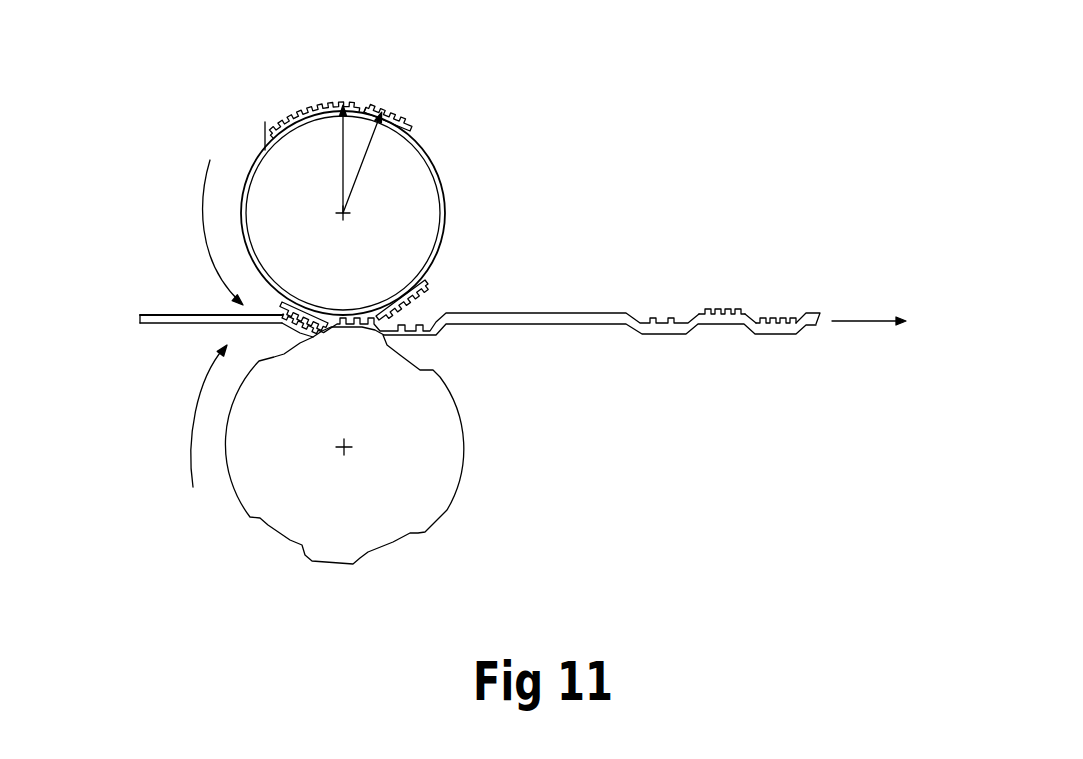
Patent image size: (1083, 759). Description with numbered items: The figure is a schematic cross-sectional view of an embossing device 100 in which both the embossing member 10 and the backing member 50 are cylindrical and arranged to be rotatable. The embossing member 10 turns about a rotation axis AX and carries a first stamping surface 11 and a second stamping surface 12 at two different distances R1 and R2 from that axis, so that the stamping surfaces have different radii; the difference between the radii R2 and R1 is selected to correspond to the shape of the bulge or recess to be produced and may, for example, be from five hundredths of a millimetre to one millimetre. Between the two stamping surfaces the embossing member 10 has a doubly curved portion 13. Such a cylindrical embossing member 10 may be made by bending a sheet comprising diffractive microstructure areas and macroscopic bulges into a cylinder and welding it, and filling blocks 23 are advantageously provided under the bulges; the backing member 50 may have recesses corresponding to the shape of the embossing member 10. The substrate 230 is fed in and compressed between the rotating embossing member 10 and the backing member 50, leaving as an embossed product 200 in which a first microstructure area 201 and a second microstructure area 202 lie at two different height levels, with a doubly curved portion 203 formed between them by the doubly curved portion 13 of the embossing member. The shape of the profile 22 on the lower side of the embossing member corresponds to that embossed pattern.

The embossing member 10 is at (448, 203).
The first stamping surface 11 is at (358, 98).
The second stamping surface 12 is at (423, 108).
The doubly curved portion 13 is at (370, 105).
The lower embossing plate segment 22 is at (418, 237).
The filling block 23 is at (265, 135).
The backing member 50 is at (465, 463).
The embossing device 100 is at (212, 534).
The product 200 is at (816, 325).
The first microstructure area 201 is at (738, 312).
The second microstructure area 202 is at (793, 320).
The doubly curved portion 203 is at (745, 315).
The substrate 230 is at (142, 316).
The first radius R1 is at (327, 159).
The second radius R2 is at (370, 162).
The rotation axis AX is at (343, 214).